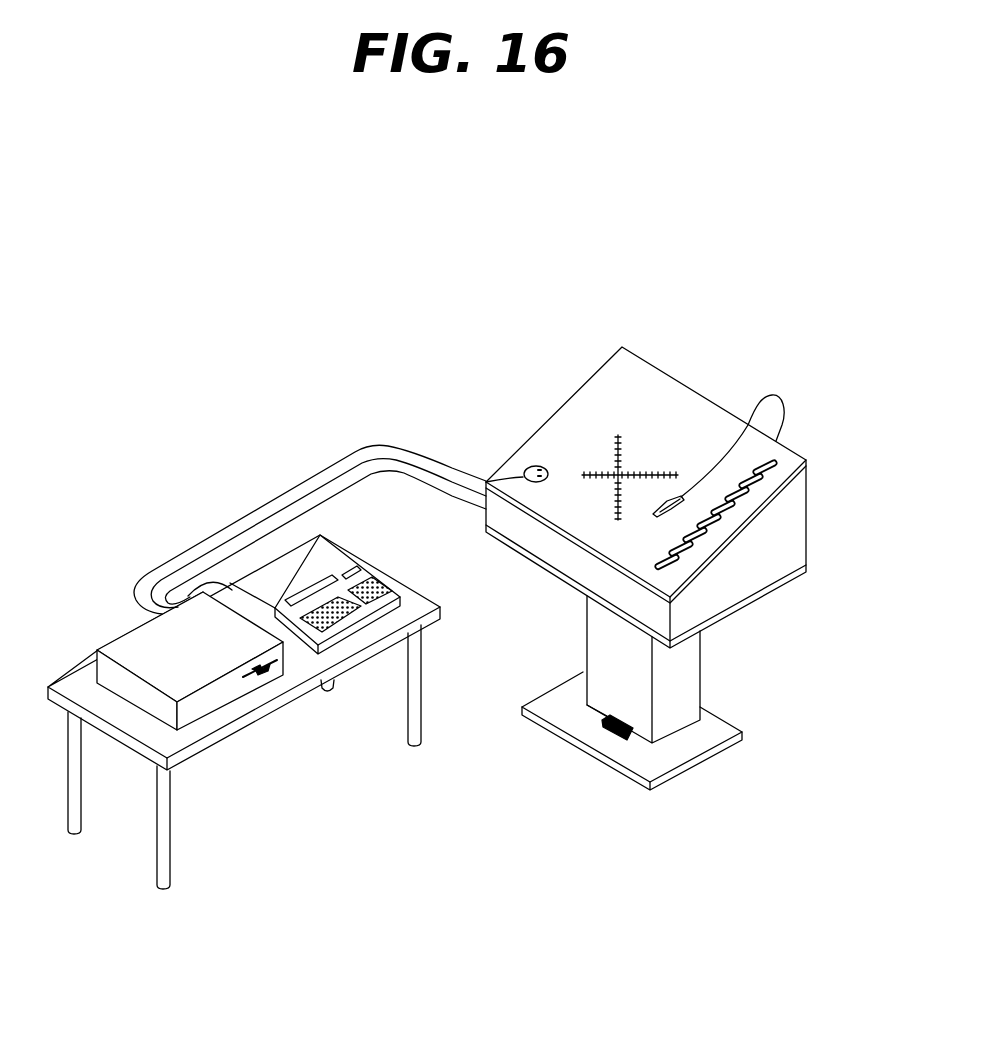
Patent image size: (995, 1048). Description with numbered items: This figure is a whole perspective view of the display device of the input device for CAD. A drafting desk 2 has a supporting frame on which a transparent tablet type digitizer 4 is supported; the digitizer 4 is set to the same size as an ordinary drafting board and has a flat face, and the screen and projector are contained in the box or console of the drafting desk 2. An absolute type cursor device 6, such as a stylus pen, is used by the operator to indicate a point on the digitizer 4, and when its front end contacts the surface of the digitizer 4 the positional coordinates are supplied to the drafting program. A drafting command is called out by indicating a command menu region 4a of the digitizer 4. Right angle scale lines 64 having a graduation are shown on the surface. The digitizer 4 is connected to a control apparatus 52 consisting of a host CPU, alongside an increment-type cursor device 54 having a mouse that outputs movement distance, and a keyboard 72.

The drafting desk 2 is at (690, 677).
The transparent tablet type digitizer 4 is at (652, 390).
The command menu region 4a is at (730, 499).
The absolute type cursor device 6 is at (667, 500).
The control apparatus 52 is at (137, 644).
The cursor device 54 is at (533, 465).
The right angle scale lines 64 is at (613, 454).
The keyboard 72 is at (367, 575).